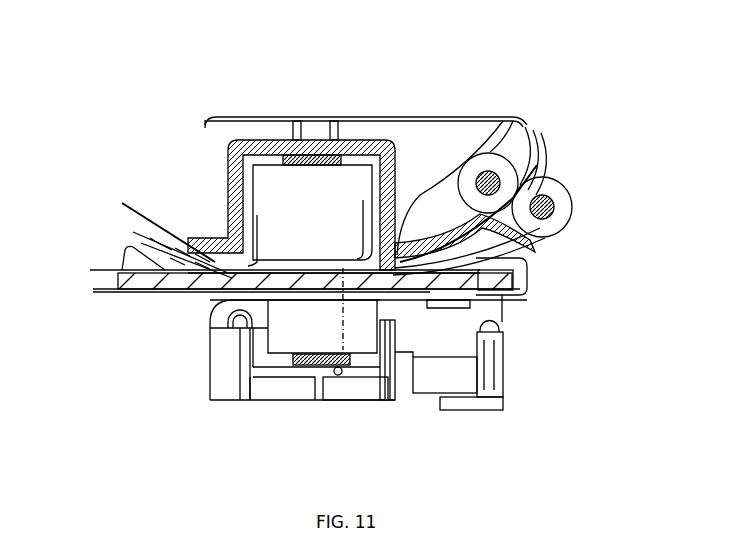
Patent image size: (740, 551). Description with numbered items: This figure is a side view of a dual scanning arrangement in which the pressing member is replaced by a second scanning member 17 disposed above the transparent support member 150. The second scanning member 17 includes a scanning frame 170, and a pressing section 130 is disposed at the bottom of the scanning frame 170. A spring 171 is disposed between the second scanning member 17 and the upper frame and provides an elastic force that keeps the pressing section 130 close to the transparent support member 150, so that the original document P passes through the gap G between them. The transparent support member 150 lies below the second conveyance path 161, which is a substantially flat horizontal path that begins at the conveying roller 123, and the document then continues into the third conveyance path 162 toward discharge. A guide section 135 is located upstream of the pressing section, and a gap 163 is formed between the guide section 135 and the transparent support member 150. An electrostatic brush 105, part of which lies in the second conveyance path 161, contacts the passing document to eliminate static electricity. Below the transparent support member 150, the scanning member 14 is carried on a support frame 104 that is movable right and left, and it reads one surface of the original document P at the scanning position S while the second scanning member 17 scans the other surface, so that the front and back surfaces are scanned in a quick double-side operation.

The second scanning member 17 is at (250, 117).
The spring 171 is at (296, 120).
The pressing section 130 is at (325, 258).
The scanning frame 170 is at (398, 202).
The electrostatic brush 105 is at (503, 117).
The conveying roller 123 is at (568, 230).
The third conveyance path 162 is at (118, 240).
The original document P is at (193, 240).
The gap G is at (268, 195).
The second conveyance path 161 is at (400, 302).
The gap 163 is at (393, 293).
The guide section 135 is at (380, 297).
The scanning position S is at (350, 370).
The scanning member 14 is at (310, 345).
The support frame 104 is at (253, 367).
The transparent support member 150 is at (247, 282).